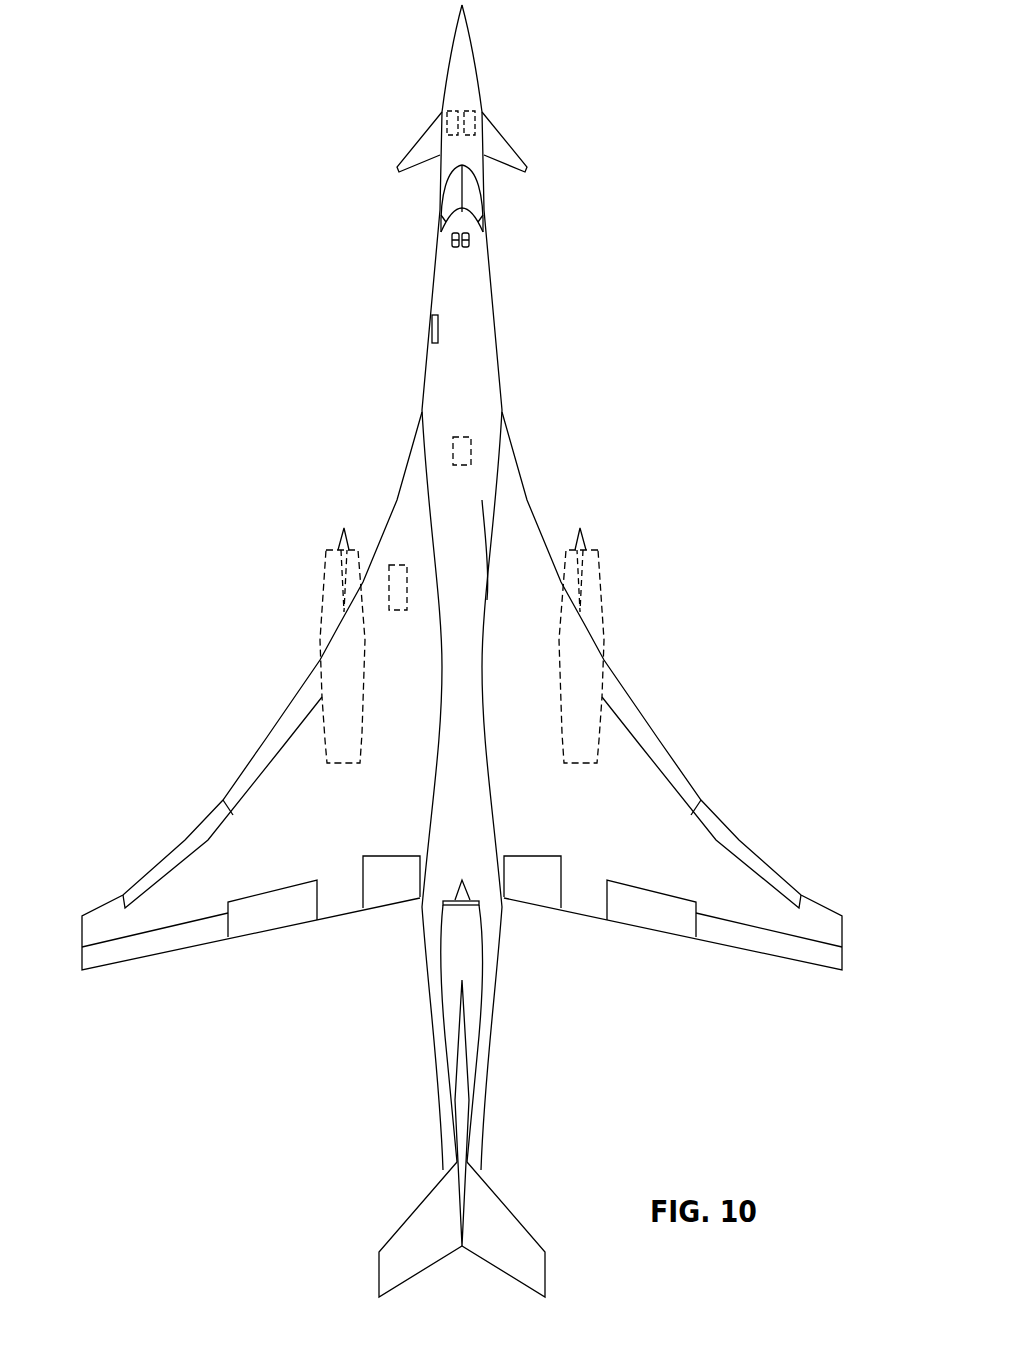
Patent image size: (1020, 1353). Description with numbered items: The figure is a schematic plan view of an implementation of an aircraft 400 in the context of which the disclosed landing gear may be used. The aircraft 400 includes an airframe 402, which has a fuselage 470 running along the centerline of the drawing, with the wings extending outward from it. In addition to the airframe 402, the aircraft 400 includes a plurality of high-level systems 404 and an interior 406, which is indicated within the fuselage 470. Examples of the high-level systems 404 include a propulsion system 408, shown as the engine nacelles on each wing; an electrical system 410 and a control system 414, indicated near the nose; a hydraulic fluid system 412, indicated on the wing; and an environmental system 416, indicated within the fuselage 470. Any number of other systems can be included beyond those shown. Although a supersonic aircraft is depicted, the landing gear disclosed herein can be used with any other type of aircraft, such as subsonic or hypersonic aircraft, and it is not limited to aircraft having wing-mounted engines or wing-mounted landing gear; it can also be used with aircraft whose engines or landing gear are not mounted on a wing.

The aircraft 400 is at (462, 651).
The airframe 402 is at (625, 391).
The high-level systems 404 is at (370, 409).
The interior 406 is at (470, 370).
The propulsion system 408 is at (325, 590).
The electrical system 410 is at (441, 113).
The hydraulic fluid system 412 is at (397, 565).
The control system 414 is at (483, 113).
The environmental system 416 is at (468, 445).
The fuselage 470 is at (492, 553).